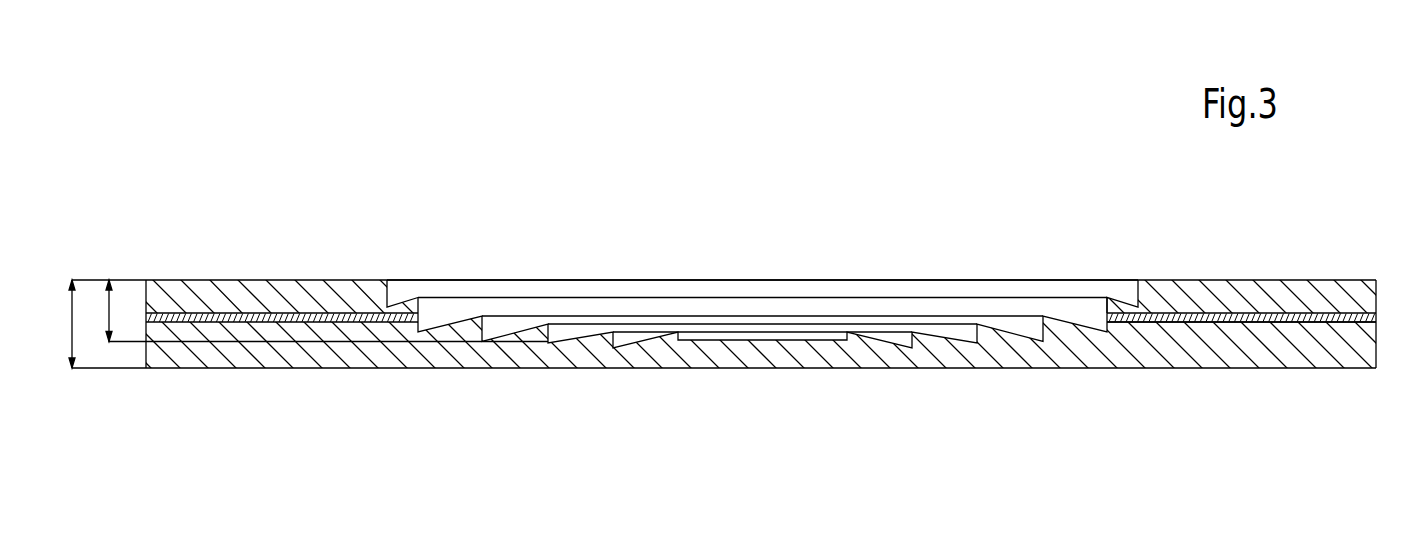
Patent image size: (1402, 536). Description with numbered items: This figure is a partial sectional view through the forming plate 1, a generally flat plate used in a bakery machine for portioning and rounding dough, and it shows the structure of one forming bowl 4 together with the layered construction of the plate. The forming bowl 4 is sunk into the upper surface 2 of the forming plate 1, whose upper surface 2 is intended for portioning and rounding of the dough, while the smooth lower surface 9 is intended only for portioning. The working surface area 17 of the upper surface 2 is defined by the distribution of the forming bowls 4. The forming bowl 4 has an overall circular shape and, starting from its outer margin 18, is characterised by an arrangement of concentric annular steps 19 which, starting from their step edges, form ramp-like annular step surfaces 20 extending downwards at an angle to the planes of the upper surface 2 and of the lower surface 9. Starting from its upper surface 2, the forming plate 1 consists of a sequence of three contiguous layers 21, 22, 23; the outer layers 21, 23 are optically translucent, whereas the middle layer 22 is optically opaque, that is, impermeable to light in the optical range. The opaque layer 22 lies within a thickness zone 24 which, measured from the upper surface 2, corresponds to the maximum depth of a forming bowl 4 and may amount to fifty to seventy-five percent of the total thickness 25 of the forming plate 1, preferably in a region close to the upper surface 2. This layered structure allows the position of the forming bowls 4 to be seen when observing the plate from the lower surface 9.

The forming plate 1 is at (297, 176).
The upper surface 2 is at (1291, 282).
The forming bowl 4 is at (889, 287).
The lower surface 9 is at (1061, 370).
The working surface area 17 is at (418, 280).
The outer margin 18 is at (1137, 282).
The concentric annular steps 19 is at (1042, 316).
The ramp-like annular step surfaces 20 is at (1012, 331).
The layer 21 is at (194, 290).
The optically opaque layer 22 is at (268, 307).
The layer 23 is at (345, 348).
The thickness zone 24 is at (112, 305).
The thickness 25 is at (73, 327).